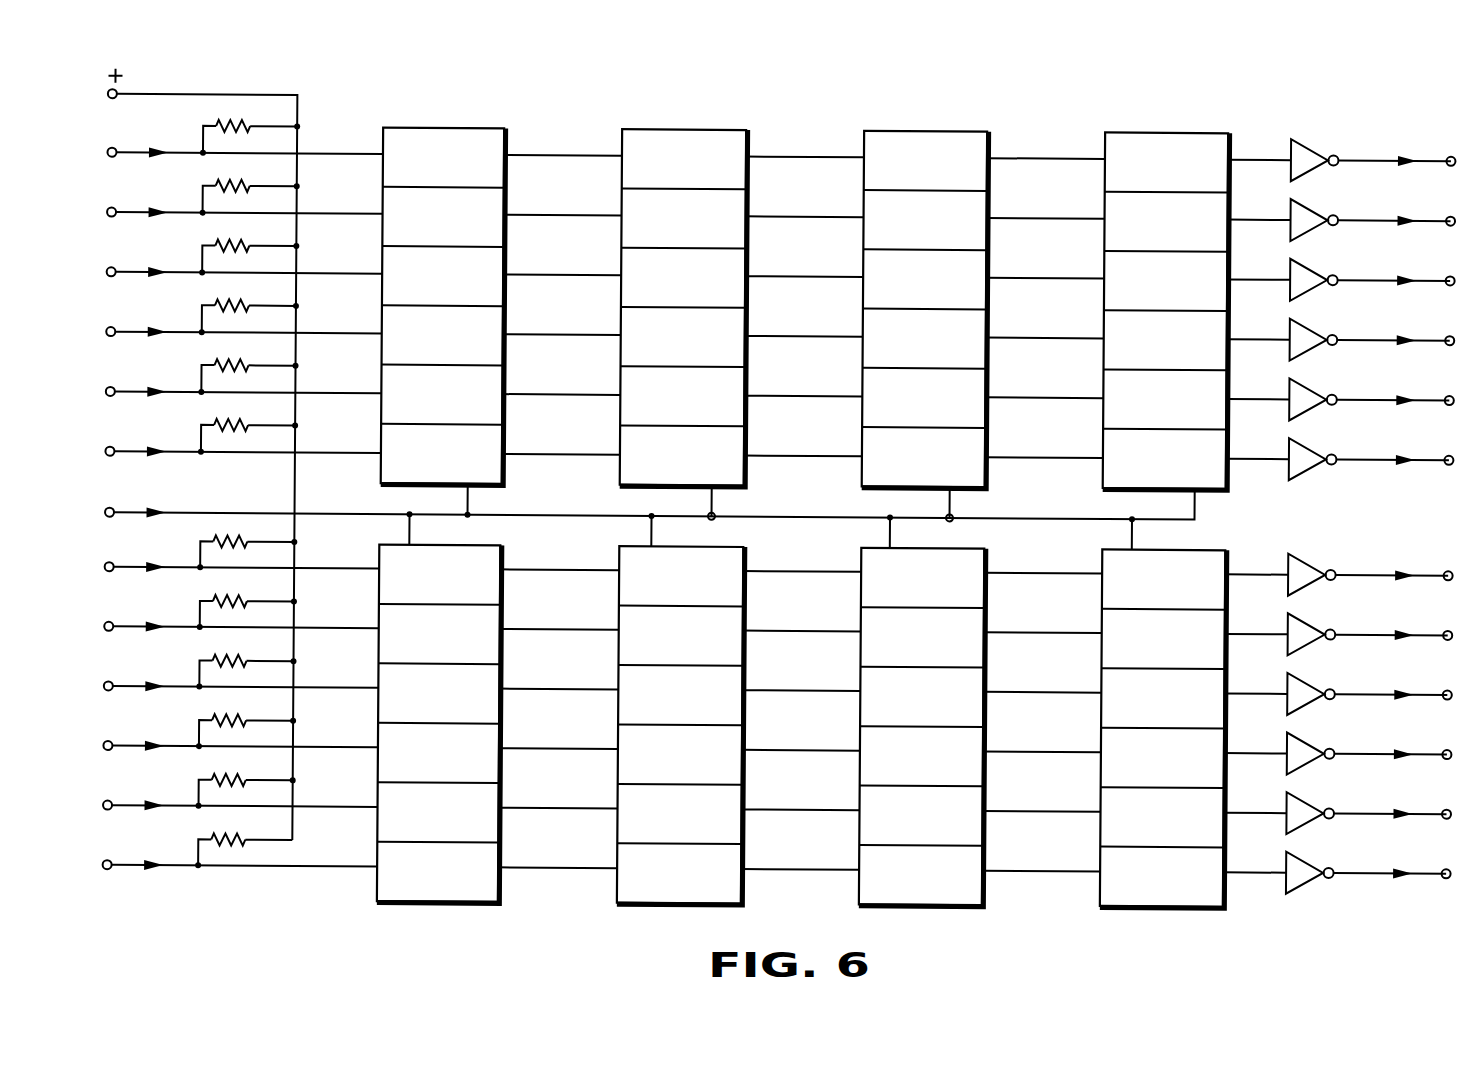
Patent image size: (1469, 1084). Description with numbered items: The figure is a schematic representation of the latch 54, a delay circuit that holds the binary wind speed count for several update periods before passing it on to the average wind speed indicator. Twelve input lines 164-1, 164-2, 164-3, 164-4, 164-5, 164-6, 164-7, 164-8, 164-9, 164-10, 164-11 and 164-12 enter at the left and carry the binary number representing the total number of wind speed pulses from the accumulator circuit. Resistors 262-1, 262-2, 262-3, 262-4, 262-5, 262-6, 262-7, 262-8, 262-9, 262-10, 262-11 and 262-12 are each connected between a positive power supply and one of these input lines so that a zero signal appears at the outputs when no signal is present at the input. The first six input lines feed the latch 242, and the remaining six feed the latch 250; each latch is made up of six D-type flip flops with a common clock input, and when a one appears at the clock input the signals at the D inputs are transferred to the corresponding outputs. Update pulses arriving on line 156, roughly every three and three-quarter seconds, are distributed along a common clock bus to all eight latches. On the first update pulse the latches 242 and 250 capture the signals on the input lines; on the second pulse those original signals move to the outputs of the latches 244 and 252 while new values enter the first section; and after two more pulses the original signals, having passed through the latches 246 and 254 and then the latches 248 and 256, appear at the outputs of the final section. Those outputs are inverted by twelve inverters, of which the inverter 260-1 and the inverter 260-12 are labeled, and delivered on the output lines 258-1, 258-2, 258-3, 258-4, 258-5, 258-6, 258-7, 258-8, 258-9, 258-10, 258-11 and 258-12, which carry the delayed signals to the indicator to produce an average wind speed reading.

The latch 54 is at (764, 517).
The update signal line 156 is at (126, 513).
The input line 164-1 is at (139, 154).
The input line 164-2 is at (139, 213).
The input line 164-3 is at (139, 273).
The input line 164-4 is at (139, 333).
The input line 164-5 is at (139, 393).
The input line 164-6 is at (139, 452).
The input line 164-7 is at (141, 568).
The input line 164-8 is at (141, 628).
The input line 164-9 is at (141, 687).
The input line 164-10 is at (142, 747).
The input line 164-11 is at (142, 806).
The input line 164-12 is at (142, 866).
The latch 242 is at (472, 125).
The latch 244 is at (694, 125).
The latch 246 is at (917, 126).
The latch 248 is at (1180, 124).
The latch 250 is at (470, 542).
The latch 252 is at (720, 541).
The latch 254 is at (964, 542).
The latch 256 is at (1202, 540).
The output line 258-1 is at (1356, 154).
The output line 258-2 is at (1356, 213).
The output line 258-3 is at (1356, 273).
The output line 258-4 is at (1356, 333).
The output line 258-5 is at (1356, 393).
The output line 258-6 is at (1356, 452).
The output line 258-7 is at (1356, 568).
The output line 258-8 is at (1356, 628).
The output line 258-9 is at (1356, 687).
The output line 258-10 is at (1356, 747).
The output line 258-11 is at (1356, 806).
The output line 258-12 is at (1356, 866).
The inverter 260-1 is at (1313, 146).
The inverter 260-12 is at (1305, 880).
The resistor 262-1 is at (217, 126).
The resistor 262-2 is at (217, 186).
The resistor 262-3 is at (217, 246).
The resistor 262-4 is at (217, 306).
The resistor 262-5 is at (217, 366).
The resistor 262-6 is at (217, 426).
The resistor 262-7 is at (217, 542).
The resistor 262-8 is at (217, 602).
The resistor 262-9 is at (217, 661).
The resistor 262-10 is at (219, 721).
The resistor 262-11 is at (219, 780).
The resistor 262-12 is at (219, 840).